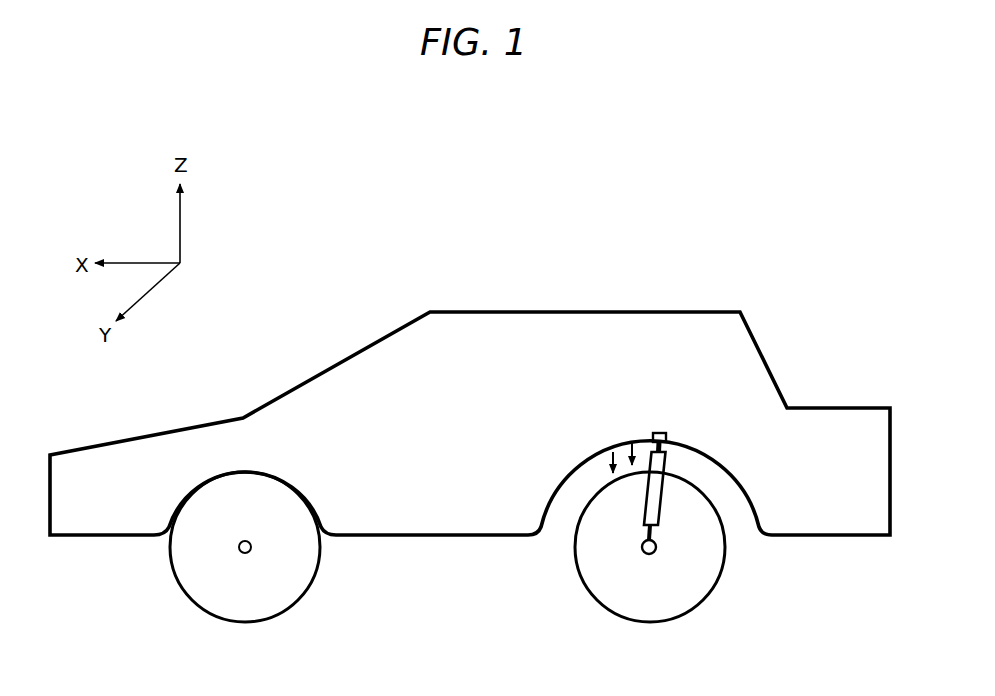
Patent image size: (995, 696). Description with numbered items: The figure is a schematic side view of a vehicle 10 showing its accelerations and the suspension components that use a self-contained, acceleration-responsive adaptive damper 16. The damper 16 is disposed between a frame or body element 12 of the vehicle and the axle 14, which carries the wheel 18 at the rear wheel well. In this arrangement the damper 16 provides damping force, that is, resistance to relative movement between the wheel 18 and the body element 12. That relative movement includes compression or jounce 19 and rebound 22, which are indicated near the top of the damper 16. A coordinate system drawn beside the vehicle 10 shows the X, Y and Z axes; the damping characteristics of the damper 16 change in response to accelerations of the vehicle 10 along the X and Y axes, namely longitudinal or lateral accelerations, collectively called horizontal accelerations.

The vehicle 10 is at (691, 251).
The body element 12 is at (728, 467).
The axle 14 is at (654, 553).
The adaptive damper 16 is at (668, 467).
The wheel 18 is at (580, 573).
The jounce 19 is at (609, 472).
The rebound 22 is at (647, 435).